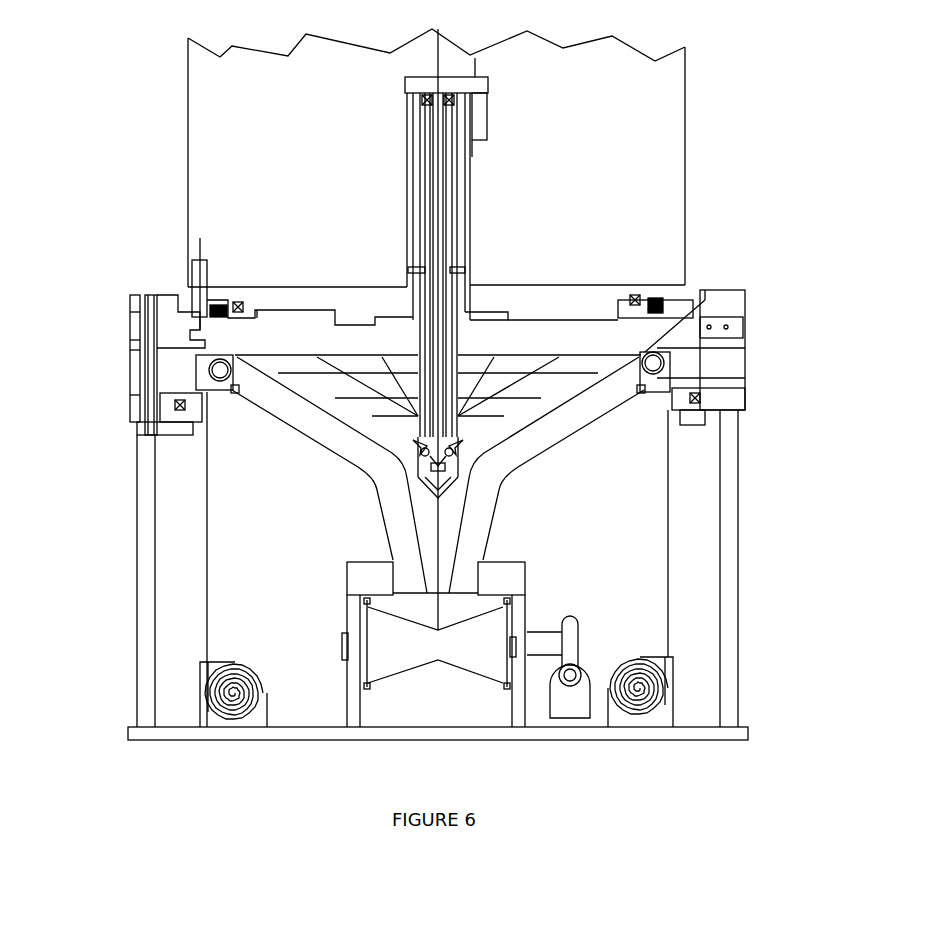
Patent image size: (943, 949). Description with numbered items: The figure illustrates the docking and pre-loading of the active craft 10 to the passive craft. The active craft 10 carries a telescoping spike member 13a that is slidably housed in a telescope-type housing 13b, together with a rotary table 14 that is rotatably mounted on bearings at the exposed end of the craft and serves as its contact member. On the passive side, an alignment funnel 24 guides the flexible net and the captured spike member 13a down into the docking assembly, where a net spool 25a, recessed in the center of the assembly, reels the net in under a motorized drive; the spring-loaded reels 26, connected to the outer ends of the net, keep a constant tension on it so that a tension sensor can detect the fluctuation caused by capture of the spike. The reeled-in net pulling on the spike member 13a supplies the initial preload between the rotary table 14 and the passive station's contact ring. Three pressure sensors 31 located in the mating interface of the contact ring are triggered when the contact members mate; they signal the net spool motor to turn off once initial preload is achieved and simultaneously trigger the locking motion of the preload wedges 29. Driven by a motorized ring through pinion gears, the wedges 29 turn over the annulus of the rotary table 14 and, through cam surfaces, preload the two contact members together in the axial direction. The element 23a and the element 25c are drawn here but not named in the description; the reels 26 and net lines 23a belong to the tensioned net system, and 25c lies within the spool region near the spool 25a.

The active craft 10 is at (680, 93).
The telescope-type housing 13b is at (464, 187).
The rotary table 14 is at (251, 308).
The preload wedges 29 is at (121, 470).
The roller 25c is at (214, 372).
The pressure sensors 31 is at (729, 331).
The distributor 23a is at (313, 396).
The telescoping spike member 13a is at (452, 410).
The alignment funnel 24 is at (489, 512).
The net spool 25a is at (371, 627).
The spring-loaded reels 26 is at (659, 688).